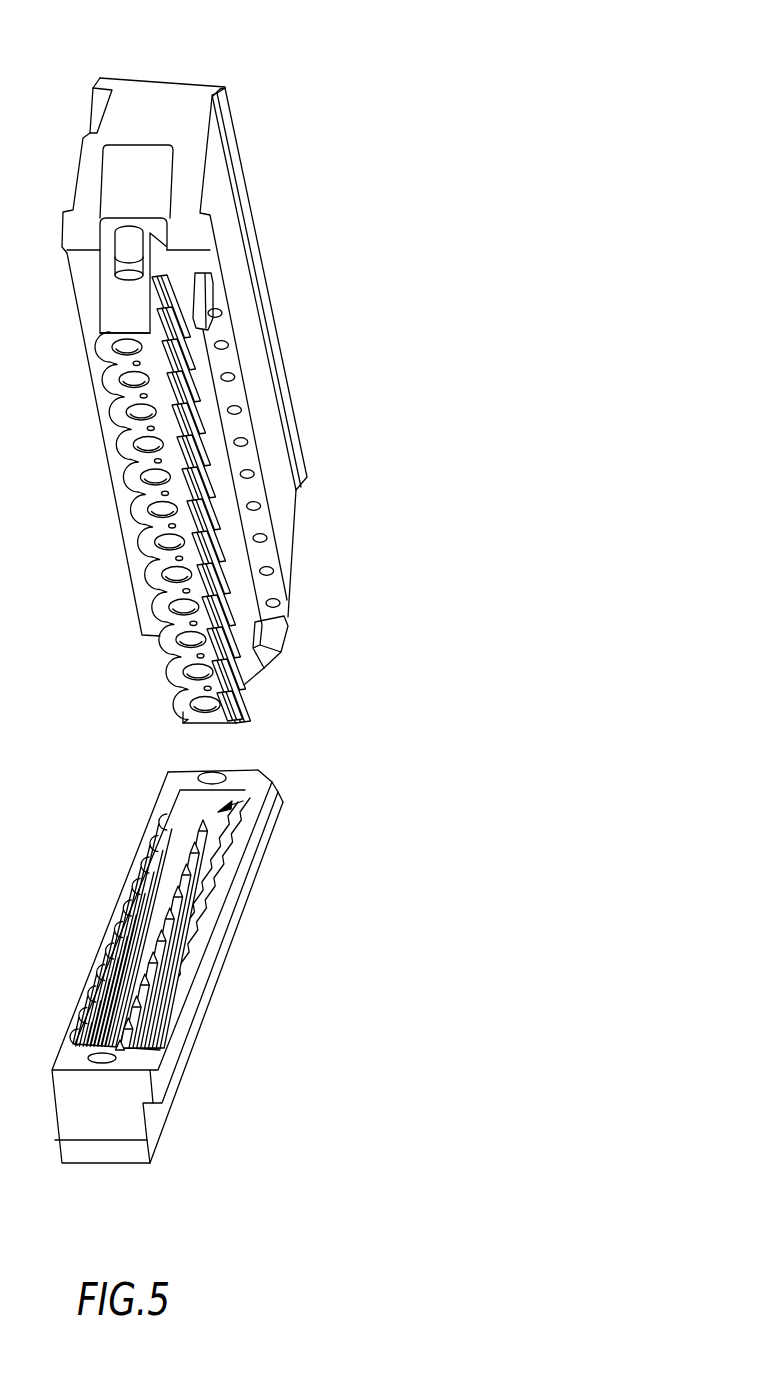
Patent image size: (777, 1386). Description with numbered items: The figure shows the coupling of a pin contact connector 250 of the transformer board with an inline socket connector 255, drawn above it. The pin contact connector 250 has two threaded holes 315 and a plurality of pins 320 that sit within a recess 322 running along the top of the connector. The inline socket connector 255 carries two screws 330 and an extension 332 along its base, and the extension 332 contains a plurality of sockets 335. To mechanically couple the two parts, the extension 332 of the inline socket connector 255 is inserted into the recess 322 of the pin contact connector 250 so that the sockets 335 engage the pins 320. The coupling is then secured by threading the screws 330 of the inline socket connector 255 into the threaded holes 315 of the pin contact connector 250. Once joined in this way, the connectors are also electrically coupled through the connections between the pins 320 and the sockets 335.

The inline socket connector 255 is at (172, 107).
The screws 330 is at (128, 263).
The extension 332 is at (133, 318).
The sockets 335 is at (250, 678).
The threaded holes 315 is at (225, 770).
The recess 322 is at (268, 790).
The pins 320 is at (183, 900).
The pin contact connector 250 is at (128, 1150).